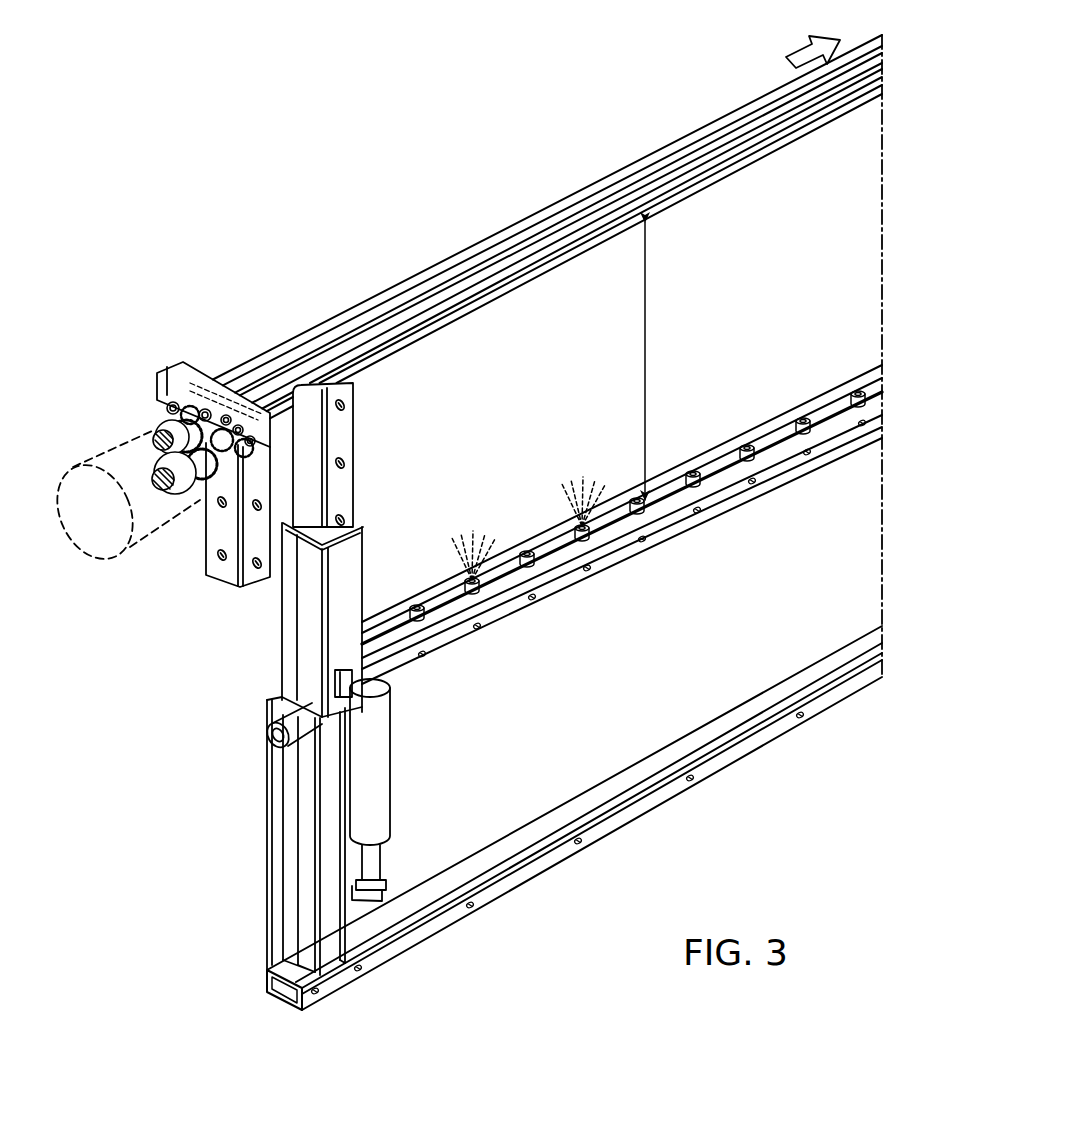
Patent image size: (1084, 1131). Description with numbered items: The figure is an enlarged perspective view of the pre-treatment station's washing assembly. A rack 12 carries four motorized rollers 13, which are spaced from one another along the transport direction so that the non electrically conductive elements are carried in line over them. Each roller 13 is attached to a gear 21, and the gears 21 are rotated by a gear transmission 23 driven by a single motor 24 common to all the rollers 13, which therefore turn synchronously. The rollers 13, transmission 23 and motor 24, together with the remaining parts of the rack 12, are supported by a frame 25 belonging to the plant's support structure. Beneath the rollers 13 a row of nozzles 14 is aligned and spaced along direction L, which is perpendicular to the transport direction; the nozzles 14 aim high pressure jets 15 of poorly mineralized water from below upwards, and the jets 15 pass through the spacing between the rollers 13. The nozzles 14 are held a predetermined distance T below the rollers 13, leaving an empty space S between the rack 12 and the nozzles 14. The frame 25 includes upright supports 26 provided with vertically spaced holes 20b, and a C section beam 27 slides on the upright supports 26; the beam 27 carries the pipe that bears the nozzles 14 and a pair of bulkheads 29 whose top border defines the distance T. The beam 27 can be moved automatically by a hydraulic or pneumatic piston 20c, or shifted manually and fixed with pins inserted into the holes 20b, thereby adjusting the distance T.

The rack 12 is at (547, 226).
The motorized rollers 13 is at (698, 130).
The nozzles 14 is at (416, 612).
The jets 15 is at (470, 526).
The holes 20b is at (343, 446).
The hydraulic or pneumatic piston 20c is at (400, 752).
The gear 21 is at (176, 402).
The gear transmission 23 is at (150, 418).
The motor 24 is at (150, 520).
The frame 25 is at (236, 565).
The upright supports 26 is at (368, 455).
The C section beam 27 is at (298, 592).
The bulkheads 29 is at (440, 600).
The empty space S is at (830, 270).
The predetermined distance T is at (648, 392).
The direction L is at (805, 53).